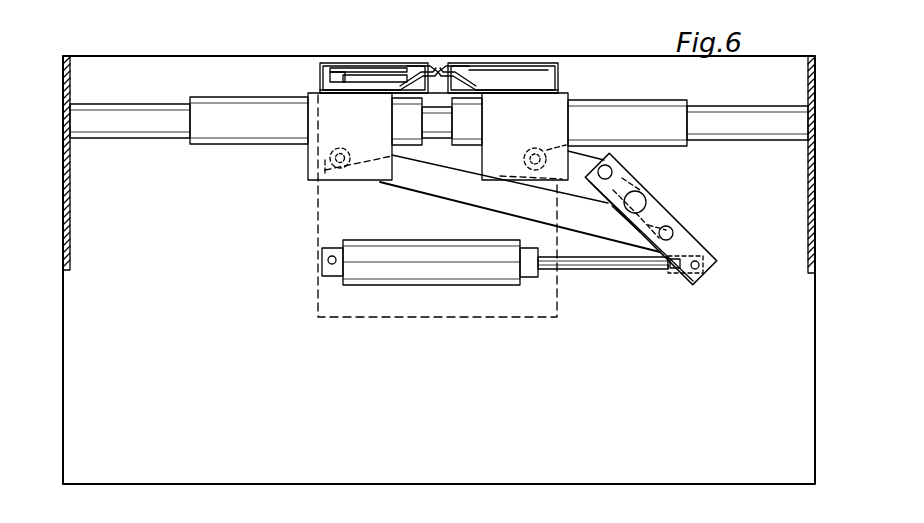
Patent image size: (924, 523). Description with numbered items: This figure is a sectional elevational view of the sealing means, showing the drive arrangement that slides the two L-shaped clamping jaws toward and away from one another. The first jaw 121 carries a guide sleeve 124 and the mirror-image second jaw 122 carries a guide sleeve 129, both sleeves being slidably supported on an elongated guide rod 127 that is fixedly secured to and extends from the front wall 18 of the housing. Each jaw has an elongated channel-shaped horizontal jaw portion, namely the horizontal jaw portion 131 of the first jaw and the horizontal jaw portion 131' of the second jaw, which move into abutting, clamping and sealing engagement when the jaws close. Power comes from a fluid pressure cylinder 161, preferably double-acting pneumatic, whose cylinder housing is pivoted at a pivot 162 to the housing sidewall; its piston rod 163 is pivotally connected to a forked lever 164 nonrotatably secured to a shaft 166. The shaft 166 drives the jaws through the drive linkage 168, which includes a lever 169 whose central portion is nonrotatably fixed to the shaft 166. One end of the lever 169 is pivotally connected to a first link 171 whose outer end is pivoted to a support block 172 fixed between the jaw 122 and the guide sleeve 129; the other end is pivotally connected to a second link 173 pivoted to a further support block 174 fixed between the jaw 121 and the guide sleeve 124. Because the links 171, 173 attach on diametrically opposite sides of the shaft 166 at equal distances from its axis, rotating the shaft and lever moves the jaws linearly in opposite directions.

The front wall 18 is at (66, 203).
The slidable L-shaped clamping jaw 121 is at (399, 63).
The slidable L-shaped clamping jaw 122 is at (540, 62).
The guide sleeve 124 is at (252, 136).
The guide rod 127 is at (748, 115).
The guide sleeve 129 is at (670, 72).
The horizontal jaw portion 131 is at (381, 54).
The horizontal jaw portion 131' is at (493, 54).
The fluid pressure cylinder 161 is at (432, 272).
The pivot 162 is at (322, 264).
The piston rod 163 is at (637, 263).
The forked lever 164 is at (693, 248).
The shaft 166 is at (642, 194).
The drive linkage 168 is at (705, 172).
The lever 169 is at (660, 208).
The first link 171 is at (577, 173).
The support block 172 is at (497, 168).
The second link 173 is at (443, 188).
The support block 174 is at (307, 165).